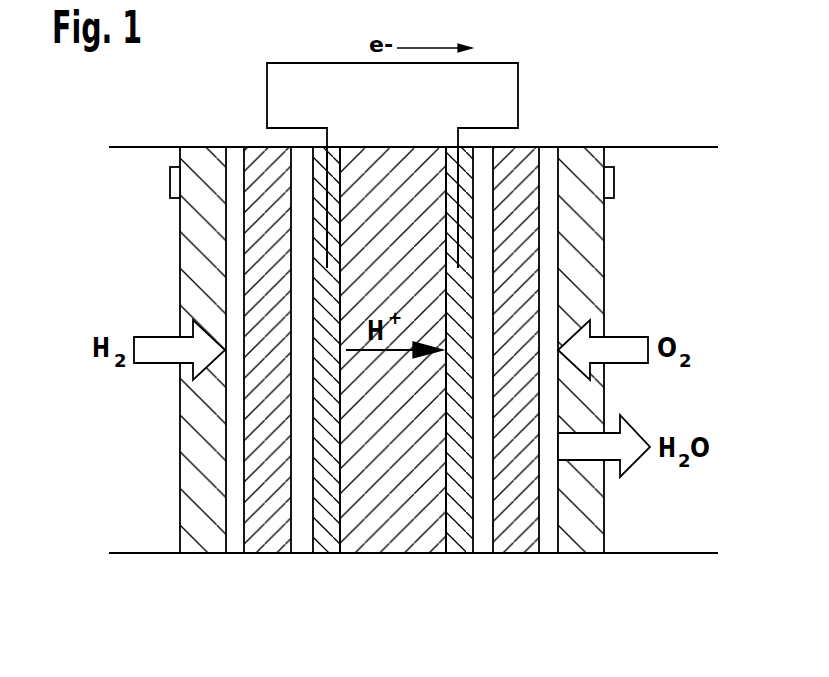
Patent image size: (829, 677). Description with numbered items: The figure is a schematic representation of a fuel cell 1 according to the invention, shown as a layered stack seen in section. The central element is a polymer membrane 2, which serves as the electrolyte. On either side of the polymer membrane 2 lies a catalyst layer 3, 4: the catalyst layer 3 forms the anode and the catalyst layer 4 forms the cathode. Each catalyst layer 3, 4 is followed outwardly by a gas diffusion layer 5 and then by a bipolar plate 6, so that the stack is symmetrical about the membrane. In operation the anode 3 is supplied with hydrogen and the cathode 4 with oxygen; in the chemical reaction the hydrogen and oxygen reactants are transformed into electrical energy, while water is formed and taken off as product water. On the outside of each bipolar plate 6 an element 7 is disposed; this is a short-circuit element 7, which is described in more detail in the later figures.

The fuel cell 1 is at (670, 82).
The polymer membrane 2 is at (401, 540).
The catalyst layer 3 is at (328, 540).
The catalyst layer 4 is at (459, 540).
The gas diffusion layer 5 is at (265, 540).
The bipolar plate 6 is at (210, 540).
The short-circuit element 7 is at (170, 182).